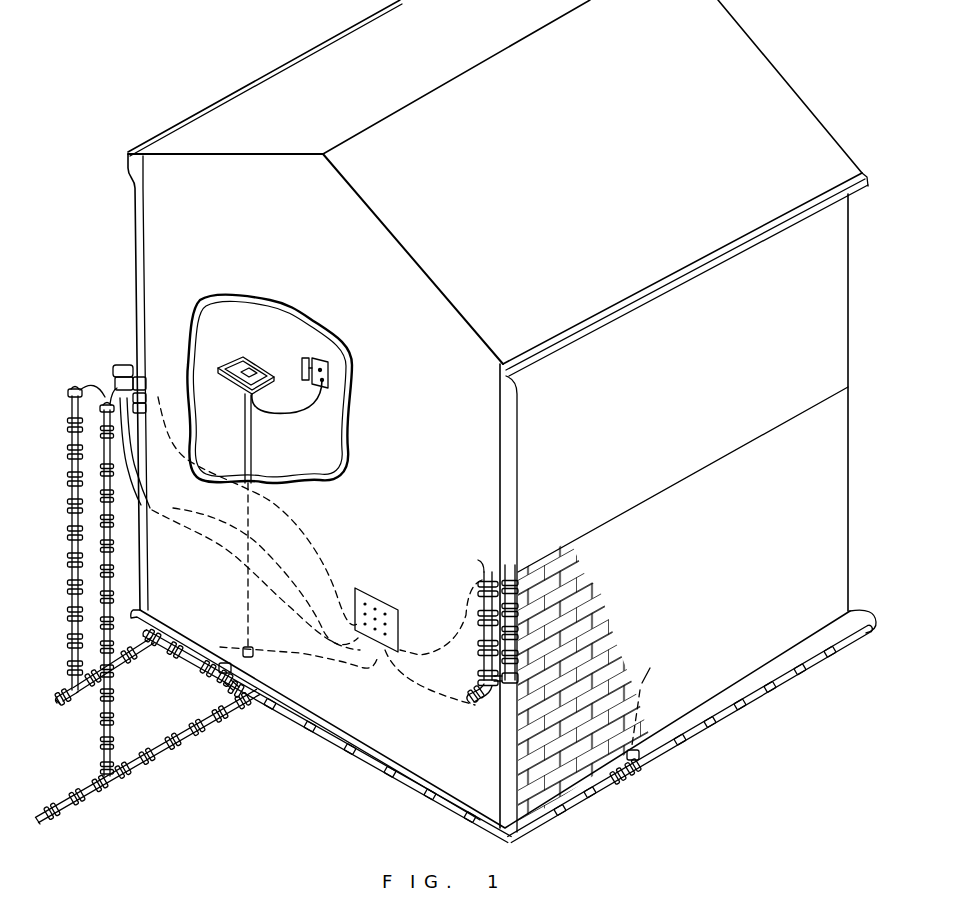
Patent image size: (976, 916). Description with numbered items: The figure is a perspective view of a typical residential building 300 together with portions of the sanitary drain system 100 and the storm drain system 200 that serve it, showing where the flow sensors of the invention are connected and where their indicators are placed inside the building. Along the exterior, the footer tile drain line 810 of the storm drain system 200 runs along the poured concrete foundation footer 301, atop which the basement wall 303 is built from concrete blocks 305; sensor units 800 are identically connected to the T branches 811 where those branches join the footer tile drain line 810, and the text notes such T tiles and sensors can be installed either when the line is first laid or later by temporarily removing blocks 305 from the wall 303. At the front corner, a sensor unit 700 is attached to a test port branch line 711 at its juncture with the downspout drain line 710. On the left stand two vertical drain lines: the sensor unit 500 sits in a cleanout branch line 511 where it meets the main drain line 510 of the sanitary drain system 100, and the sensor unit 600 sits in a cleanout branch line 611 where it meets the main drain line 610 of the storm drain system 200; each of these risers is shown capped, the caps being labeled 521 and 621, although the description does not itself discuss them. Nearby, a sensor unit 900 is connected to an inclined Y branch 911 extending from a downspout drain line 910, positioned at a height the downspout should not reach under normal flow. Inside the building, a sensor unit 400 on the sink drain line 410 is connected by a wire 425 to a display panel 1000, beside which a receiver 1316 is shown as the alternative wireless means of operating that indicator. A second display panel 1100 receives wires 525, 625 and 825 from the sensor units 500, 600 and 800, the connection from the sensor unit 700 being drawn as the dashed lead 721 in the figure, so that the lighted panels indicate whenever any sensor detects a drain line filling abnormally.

The sanitary drain system 100 is at (36, 836).
The storm drain system 200 is at (52, 720).
The residential building 300 is at (272, 107).
The poured concrete foundation footer 301 is at (560, 806).
The basement wall 303 is at (748, 637).
The concrete blocks 305 is at (646, 656).
The sensor unit 400 is at (267, 408).
The sink drain line 410 is at (244, 432).
The wire 425 is at (310, 405).
The sensor unit 500 is at (110, 393).
The main drain line 510 is at (162, 754).
The cleanout branch line 511 is at (114, 695).
The end cap 521 is at (98, 407).
The wire 525 is at (190, 530).
The sensor unit 600 is at (73, 383).
The main drain line 610 is at (128, 668).
The cleanout branch line 611 is at (67, 555).
The end cap 621 is at (68, 393).
The wire 625 is at (162, 478).
The sensor unit 700 is at (443, 623).
The downspout drain line 710 is at (476, 704).
The test port branch line 711 is at (488, 580).
The riser conduit 721 is at (462, 598).
The sensor units 800 is at (507, 709).
The footer tile drain line 810 is at (250, 738).
The T branches 811 is at (217, 688).
The wire 825 is at (303, 660).
The sensor unit 900 is at (127, 360).
The downspout drain line 910 is at (152, 384).
The Y branch 911 is at (147, 362).
The display panel 1000 is at (323, 355).
The display panel 1100 is at (392, 590).
The receiver 1316 is at (300, 365).